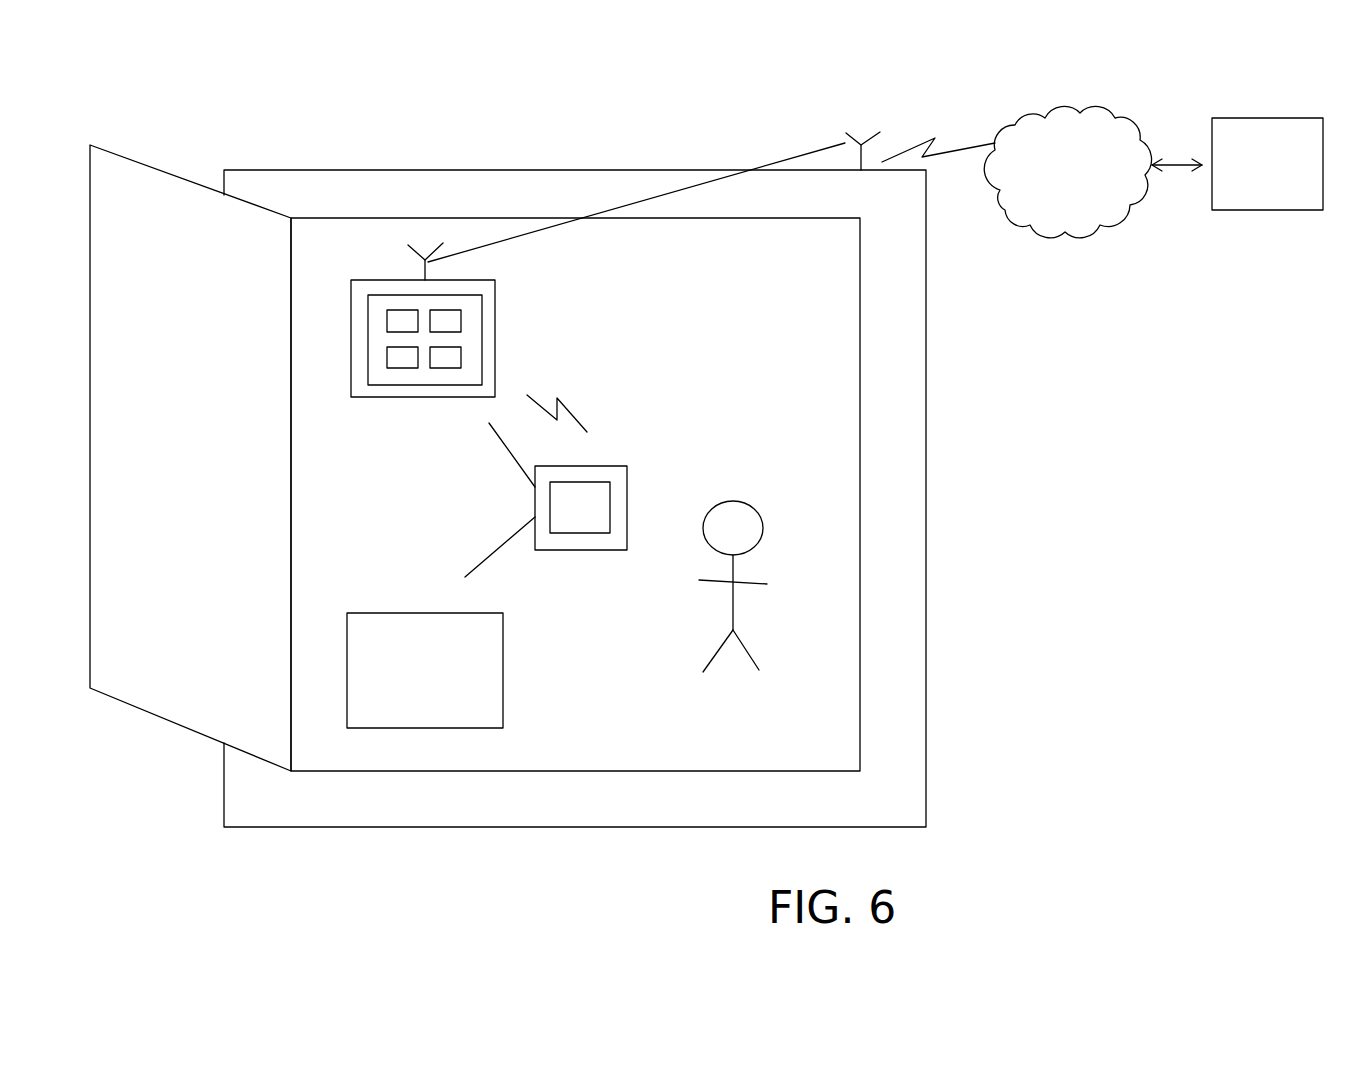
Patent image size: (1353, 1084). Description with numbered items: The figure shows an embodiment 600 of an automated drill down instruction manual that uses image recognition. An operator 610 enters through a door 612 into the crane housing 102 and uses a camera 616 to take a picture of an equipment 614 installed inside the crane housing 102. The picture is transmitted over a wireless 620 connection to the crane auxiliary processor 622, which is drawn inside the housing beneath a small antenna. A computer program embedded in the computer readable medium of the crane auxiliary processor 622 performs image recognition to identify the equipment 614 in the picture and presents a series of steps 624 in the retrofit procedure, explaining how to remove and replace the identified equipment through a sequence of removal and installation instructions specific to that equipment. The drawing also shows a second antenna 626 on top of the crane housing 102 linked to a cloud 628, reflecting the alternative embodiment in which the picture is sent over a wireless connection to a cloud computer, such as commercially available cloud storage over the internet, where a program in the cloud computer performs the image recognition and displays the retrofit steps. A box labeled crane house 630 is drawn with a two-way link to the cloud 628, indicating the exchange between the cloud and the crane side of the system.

The system environment 600 is at (659, 117).
The crane housing 102 is at (892, 345).
The door 612 is at (182, 706).
The equipment 614 is at (483, 703).
The camera 616 is at (613, 532).
The wireless connection 620 is at (565, 395).
The crane auxiliary processor 622 is at (483, 340).
The series of steps 624 is at (426, 302).
The external antenna 626 is at (861, 160).
The network cloud 628 is at (1038, 215).
The crane house 630 is at (1238, 200).
The operator 610 is at (733, 612).